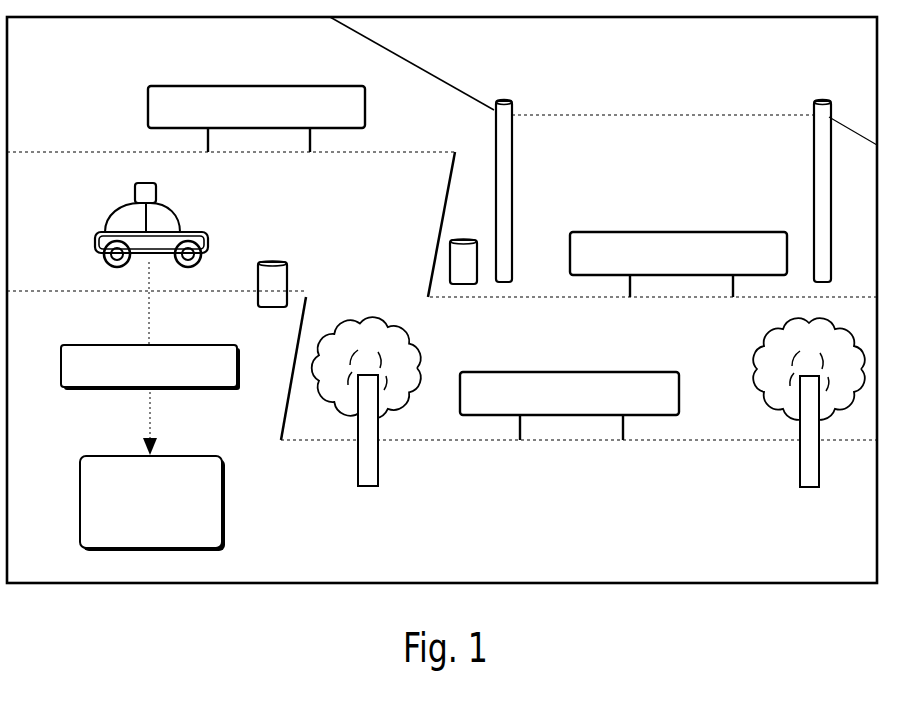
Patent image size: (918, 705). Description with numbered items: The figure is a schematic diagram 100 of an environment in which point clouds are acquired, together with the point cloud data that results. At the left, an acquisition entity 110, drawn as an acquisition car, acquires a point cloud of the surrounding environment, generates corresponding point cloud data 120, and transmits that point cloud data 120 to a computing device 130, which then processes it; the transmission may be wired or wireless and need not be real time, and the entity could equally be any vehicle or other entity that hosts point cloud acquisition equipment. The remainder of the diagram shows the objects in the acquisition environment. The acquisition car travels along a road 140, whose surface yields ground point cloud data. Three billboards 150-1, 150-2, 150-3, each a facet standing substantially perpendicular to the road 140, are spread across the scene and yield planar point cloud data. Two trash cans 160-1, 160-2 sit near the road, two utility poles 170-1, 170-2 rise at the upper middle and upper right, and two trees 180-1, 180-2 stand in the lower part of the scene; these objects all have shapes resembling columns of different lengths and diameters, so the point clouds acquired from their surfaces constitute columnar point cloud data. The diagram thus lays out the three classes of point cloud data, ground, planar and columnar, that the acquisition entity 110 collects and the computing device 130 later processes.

The schematic diagram 100 is at (68, 48).
The acquisition entity 110 is at (170, 196).
The point cloud data 120 is at (190, 345).
The computing device 130 is at (187, 456).
The road 140 is at (442, 277).
The billboard 150-1 is at (243, 86).
The billboard 150-2 is at (672, 232).
The billboard 150-3 is at (562, 372).
The trash can 160-1 is at (288, 262).
The trash can 160-2 is at (453, 240).
The utility pole 170-1 is at (512, 100).
The utility pole 170-2 is at (815, 100).
The tree 180-1 is at (418, 358).
The tree 180-2 is at (773, 343).